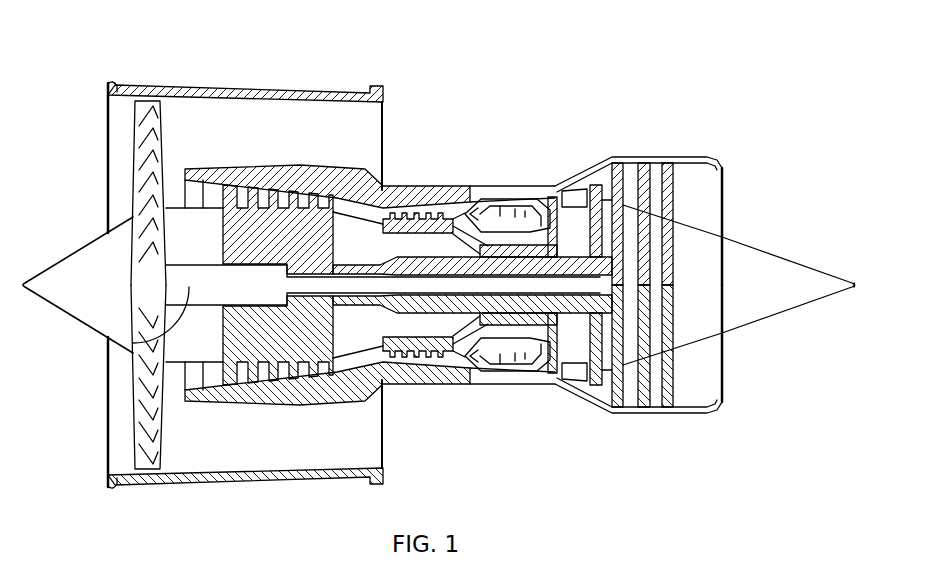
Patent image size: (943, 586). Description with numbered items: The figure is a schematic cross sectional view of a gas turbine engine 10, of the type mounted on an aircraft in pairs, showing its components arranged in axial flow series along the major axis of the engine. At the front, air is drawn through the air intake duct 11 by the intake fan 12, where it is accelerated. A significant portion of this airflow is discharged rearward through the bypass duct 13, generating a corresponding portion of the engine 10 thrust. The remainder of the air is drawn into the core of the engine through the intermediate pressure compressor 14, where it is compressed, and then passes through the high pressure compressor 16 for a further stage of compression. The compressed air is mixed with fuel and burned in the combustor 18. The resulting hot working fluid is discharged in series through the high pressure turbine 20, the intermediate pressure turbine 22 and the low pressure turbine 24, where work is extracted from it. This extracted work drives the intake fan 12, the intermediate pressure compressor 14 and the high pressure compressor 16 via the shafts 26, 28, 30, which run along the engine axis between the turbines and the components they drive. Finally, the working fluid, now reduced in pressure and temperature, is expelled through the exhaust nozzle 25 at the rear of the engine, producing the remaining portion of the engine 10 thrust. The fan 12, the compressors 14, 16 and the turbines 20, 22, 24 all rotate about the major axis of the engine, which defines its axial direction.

The gas turbine engine 10 is at (472, 53).
The air intake duct 11 is at (119, 130).
The intake fan 12 is at (148, 200).
The bypass duct 13 is at (362, 145).
The intermediate pressure compressor 14 is at (236, 172).
The high pressure compressor 16 is at (413, 208).
The combustor 18 is at (503, 205).
The high pressure turbine 20 is at (553, 208).
The intermediate pressure turbine 22 is at (605, 172).
The low pressure turbine 24 is at (668, 163).
The exhaust nozzle 25 is at (716, 208).
The shaft 26 is at (133, 350).
The shaft 28 is at (442, 316).
The shaft 30 is at (530, 322).